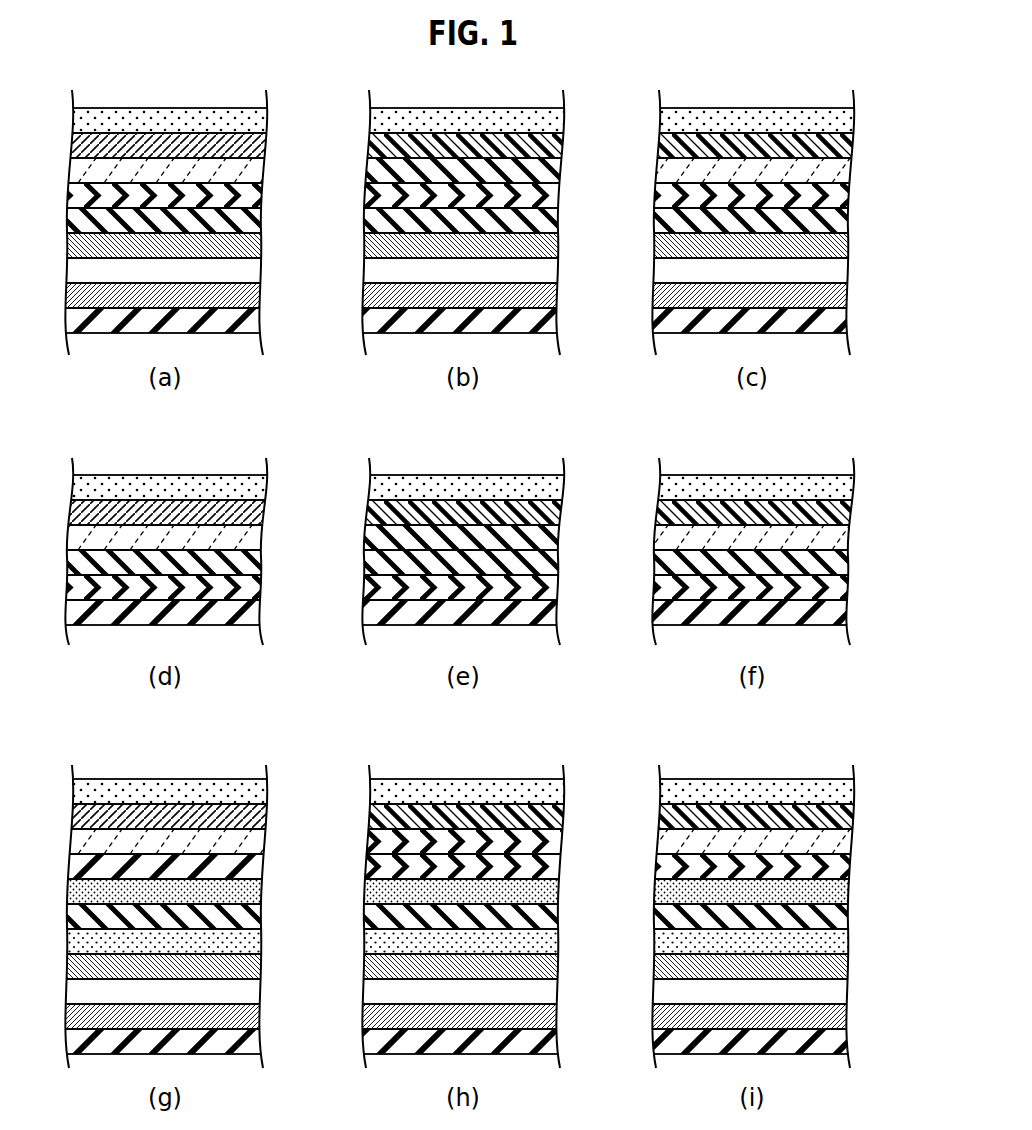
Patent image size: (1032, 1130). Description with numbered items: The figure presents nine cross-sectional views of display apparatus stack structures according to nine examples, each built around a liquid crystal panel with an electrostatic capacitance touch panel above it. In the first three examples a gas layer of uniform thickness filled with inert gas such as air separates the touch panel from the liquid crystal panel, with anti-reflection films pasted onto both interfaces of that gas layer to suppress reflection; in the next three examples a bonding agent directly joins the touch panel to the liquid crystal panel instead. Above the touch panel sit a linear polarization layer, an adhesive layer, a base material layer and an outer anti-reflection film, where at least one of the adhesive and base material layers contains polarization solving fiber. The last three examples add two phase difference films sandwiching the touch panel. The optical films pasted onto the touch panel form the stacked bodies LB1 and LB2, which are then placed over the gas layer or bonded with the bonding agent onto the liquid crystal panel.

The stacked body LB1 is at (318, 252).
The stacked body LB2 is at (318, 575).